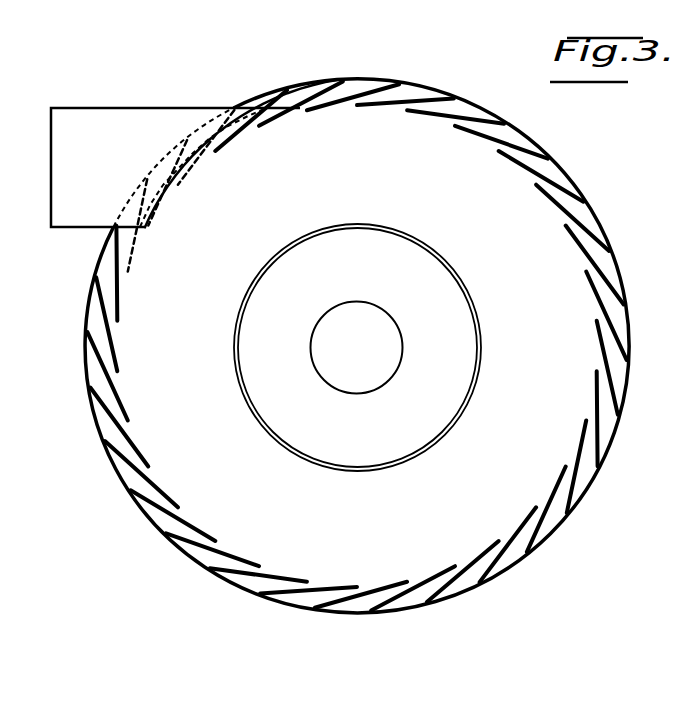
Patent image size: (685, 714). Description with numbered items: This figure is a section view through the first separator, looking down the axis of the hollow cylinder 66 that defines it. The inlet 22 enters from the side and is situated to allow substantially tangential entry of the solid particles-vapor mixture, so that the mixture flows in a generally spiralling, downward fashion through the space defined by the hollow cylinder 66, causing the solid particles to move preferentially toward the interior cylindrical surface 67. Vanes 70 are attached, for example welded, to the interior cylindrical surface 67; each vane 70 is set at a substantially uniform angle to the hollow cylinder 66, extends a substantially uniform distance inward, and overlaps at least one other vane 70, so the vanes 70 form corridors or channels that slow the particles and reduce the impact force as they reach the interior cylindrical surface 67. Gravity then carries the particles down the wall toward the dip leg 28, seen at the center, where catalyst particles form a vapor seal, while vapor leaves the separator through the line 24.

The inlet 22 is at (108, 108).
The line 24 is at (243, 400).
The dip leg 28 is at (372, 386).
The hollow cylinder 66 is at (481, 108).
The interior cylindrical surface 67 is at (614, 272).
The vanes 70 is at (540, 190).